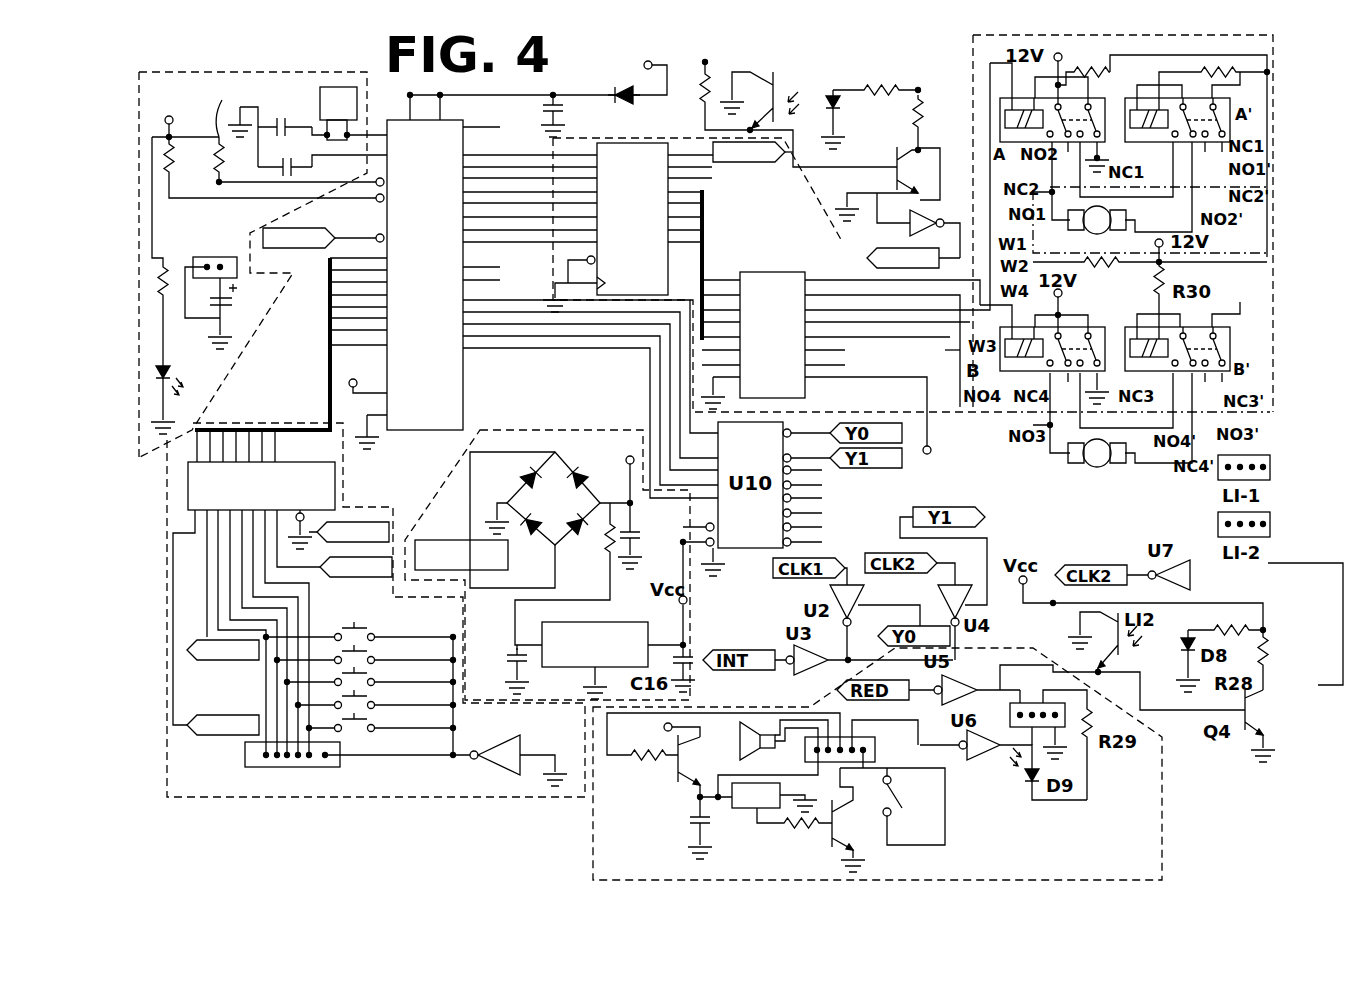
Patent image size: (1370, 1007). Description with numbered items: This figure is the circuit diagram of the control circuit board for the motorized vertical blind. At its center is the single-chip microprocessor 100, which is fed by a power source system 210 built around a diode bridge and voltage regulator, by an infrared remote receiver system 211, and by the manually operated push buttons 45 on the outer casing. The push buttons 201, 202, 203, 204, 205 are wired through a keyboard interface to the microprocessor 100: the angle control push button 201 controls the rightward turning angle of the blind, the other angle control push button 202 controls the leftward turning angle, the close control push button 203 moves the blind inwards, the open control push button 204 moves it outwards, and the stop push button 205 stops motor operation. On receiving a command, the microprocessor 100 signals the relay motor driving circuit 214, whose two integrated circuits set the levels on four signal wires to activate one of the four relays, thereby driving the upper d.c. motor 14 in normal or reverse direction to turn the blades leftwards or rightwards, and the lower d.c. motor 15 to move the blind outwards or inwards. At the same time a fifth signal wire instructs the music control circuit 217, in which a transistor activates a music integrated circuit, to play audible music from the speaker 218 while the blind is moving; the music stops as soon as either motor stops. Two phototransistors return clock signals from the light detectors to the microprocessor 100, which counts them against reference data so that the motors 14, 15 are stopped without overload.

The upper d.c. motor 14 is at (1110, 240).
The lower d.c. motor 15 is at (1105, 466).
The push buttons 45 is at (300, 797).
The single-chip microprocessor 100 is at (431, 430).
The angle control push button 201 is at (360, 630).
The angle control push button 202 is at (365, 653).
The close control push button 203 is at (370, 675).
The open control push button 204 is at (376, 698).
The stop push button 205 is at (381, 721).
The power source system 210 is at (548, 430).
The infrared remote receiver system 211 is at (273, 343).
The relay motor driving circuit 214 is at (970, 78).
The music control circuit 217 is at (593, 825).
The speaker 218 is at (748, 745).